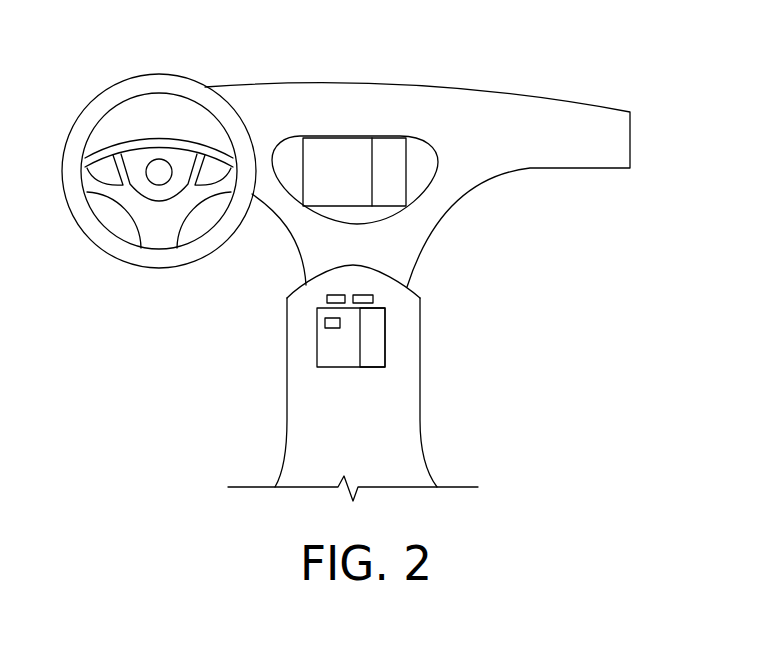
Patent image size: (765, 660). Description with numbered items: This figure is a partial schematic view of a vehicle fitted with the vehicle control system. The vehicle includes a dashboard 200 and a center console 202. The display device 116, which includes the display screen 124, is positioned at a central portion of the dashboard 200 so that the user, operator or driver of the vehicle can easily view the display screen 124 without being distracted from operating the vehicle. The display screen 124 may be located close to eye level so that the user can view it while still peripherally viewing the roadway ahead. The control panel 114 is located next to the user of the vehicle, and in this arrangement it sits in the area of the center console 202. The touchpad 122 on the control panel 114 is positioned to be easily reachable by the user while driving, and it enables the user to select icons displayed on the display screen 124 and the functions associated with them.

The dashboard 200 is at (388, 90).
The center console 202 is at (403, 310).
The display device 116 is at (297, 136).
The display screen 124 is at (335, 148).
The control panel 114 is at (350, 329).
The touchpad 122 is at (377, 345).